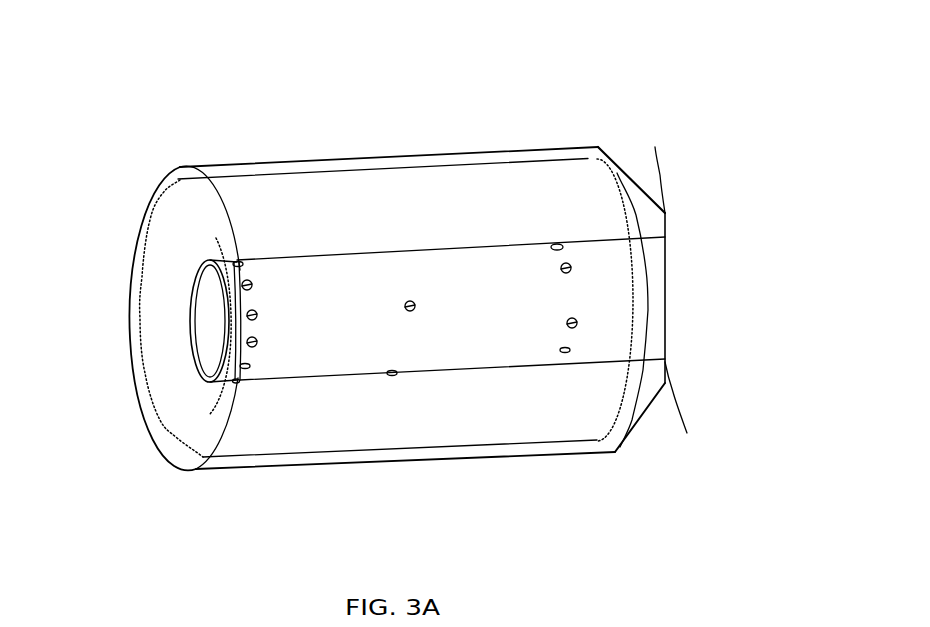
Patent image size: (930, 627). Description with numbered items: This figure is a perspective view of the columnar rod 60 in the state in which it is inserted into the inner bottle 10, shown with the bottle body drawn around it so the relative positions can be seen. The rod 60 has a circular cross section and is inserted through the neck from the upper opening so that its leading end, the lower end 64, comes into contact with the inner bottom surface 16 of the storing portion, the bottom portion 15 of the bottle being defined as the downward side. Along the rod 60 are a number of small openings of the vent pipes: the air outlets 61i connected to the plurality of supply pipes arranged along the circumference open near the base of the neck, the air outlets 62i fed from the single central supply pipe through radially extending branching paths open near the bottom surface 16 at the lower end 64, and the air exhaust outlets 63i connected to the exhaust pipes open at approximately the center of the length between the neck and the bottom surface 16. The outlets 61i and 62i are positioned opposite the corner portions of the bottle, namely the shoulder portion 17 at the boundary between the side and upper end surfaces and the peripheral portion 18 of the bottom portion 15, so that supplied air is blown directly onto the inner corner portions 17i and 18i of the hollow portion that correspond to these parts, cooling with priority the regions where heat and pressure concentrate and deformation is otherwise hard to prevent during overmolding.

The inner bottle 10 is at (358, 182).
The bottom portion 15 is at (167, 329).
The inner bottom surface 16 is at (210, 415).
The shoulder portion 17 is at (603, 133).
The corner portion 17i is at (625, 168).
The peripheral portion of the bottom portion 18 is at (148, 173).
The corner portion 18i is at (133, 233).
The rod 60 is at (468, 347).
The air outlets 61i is at (566, 263).
The air outlets 62i is at (241, 260).
The air exhaust outlets 63i is at (415, 302).
The lower end of the rod 64 is at (197, 313).